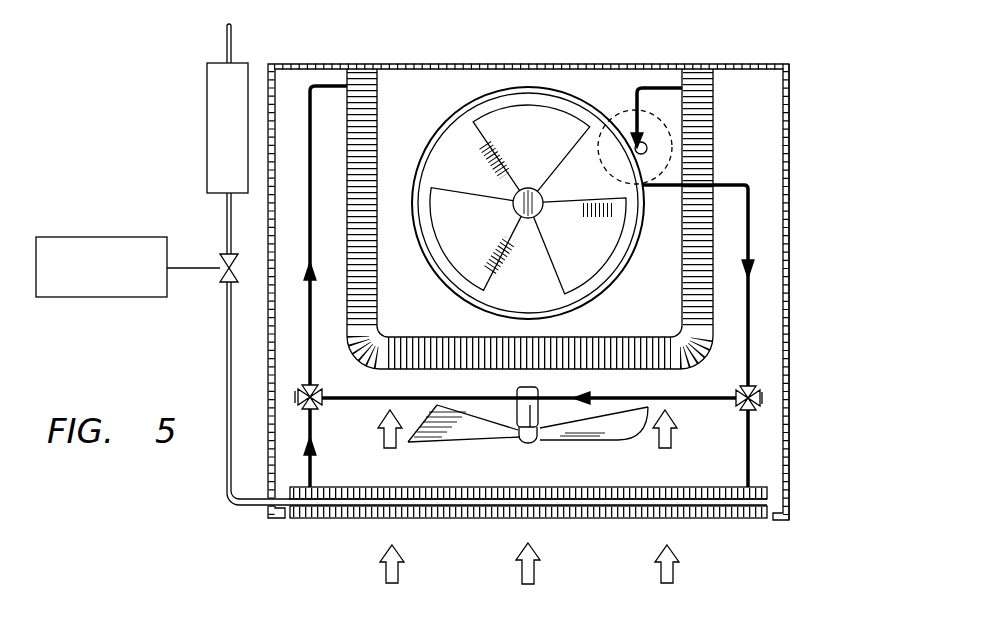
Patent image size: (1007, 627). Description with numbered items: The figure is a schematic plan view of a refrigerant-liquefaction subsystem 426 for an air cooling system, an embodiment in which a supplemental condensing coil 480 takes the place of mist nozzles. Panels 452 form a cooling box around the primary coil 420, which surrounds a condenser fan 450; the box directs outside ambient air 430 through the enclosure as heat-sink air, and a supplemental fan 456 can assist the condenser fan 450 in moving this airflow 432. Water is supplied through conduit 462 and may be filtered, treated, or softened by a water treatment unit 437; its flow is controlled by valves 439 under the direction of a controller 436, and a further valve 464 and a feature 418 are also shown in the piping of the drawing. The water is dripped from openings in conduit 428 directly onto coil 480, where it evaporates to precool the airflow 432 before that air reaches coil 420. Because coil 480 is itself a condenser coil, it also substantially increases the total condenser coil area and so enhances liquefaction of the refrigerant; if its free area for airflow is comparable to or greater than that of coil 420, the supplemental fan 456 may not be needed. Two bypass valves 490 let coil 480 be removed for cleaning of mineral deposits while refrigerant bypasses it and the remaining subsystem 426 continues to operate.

The refrigerant inlet 418 is at (618, 115).
The coil 420 is at (360, 68).
The refrigerant-liquefaction subsystem 426 is at (762, 54).
The conduit 428 is at (463, 518).
The ambient air 430 is at (382, 575).
The airflow 432 is at (383, 440).
The controller 436 is at (100, 237).
The water treatment unit 437 is at (207, 126).
The valves 439 is at (222, 278).
The condenser fan 450 is at (560, 268).
The panels 452 is at (790, 122).
The supplemental fan 456 is at (462, 440).
The conduit 462 is at (227, 44).
The valve 464 is at (222, 264).
The supplemental condensing coil 480 is at (340, 518).
The bypass valves 490 is at (318, 404).